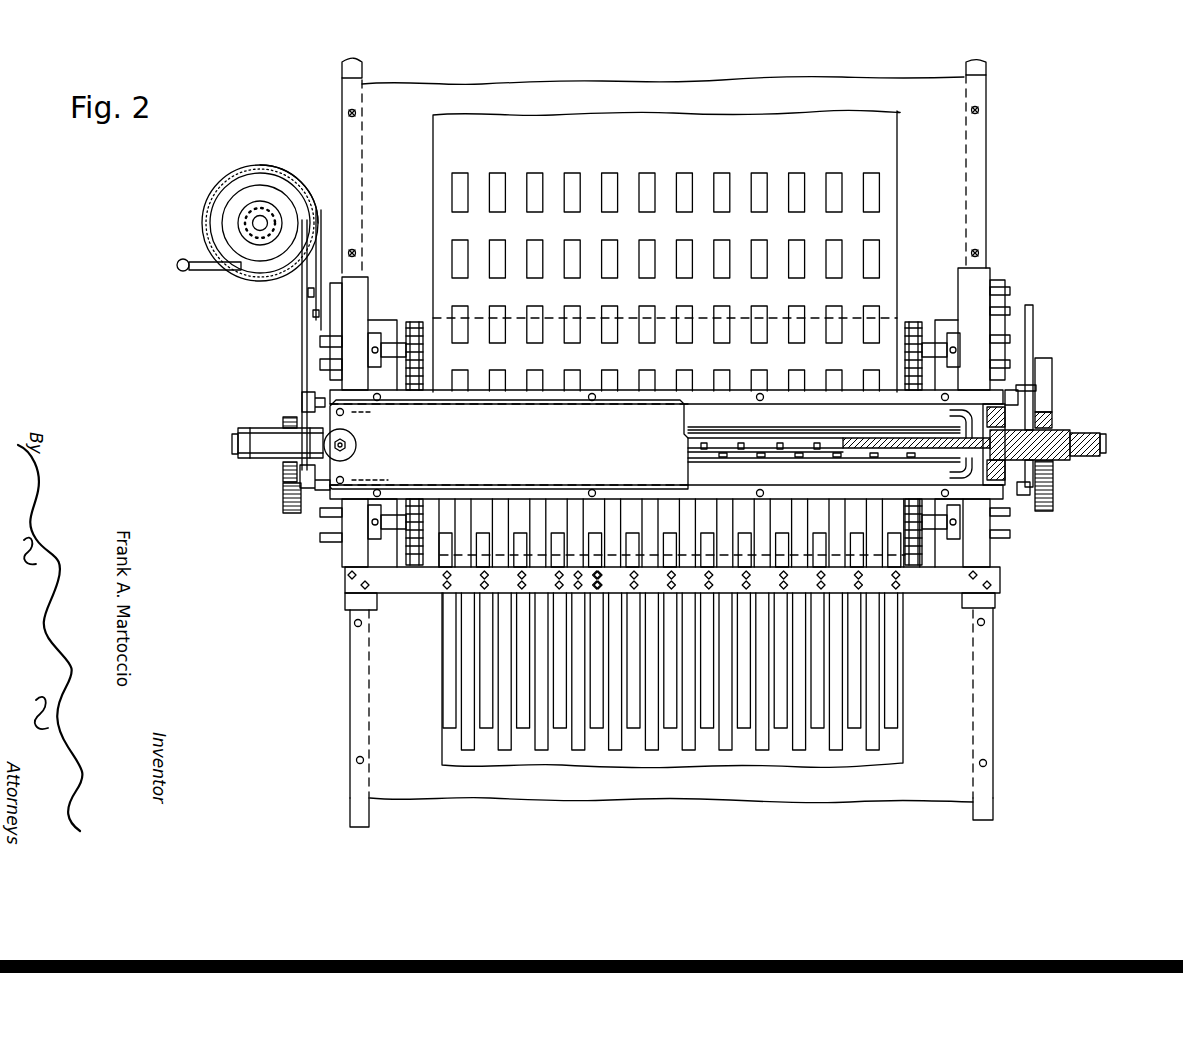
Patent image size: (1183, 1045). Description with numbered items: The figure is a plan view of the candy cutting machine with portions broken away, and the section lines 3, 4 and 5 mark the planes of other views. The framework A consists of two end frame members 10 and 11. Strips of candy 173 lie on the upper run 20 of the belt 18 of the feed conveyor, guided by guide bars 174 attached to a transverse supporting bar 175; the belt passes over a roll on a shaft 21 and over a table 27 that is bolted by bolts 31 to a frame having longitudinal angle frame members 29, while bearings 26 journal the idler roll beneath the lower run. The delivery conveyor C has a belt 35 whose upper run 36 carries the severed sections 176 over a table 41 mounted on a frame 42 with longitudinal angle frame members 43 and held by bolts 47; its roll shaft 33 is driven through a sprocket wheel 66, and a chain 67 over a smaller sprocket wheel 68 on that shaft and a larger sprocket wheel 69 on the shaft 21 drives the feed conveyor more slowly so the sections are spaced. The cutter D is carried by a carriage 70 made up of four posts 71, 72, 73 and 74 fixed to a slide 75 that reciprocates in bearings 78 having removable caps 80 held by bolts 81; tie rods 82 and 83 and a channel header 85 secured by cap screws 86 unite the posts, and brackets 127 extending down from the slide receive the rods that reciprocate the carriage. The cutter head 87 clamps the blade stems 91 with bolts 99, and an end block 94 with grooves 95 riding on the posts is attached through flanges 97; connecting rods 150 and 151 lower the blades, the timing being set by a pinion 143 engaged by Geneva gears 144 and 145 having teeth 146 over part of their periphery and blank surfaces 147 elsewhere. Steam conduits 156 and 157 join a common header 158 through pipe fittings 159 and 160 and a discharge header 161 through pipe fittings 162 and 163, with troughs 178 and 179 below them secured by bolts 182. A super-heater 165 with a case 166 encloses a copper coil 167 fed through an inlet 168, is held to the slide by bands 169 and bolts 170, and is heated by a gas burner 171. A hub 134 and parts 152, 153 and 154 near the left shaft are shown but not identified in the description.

The section line 3- 3 is at (628, 95).
The section line 4- 4 is at (235, 445).
The section line 5- 5 is at (330, 650).
The framework A is at (985, 268).
The delivery conveyor C is at (772, 128).
The cutter D is at (706, 429).
The end frame member 10 is at (348, 578).
The end frame member 11 is at (990, 572).
The belt 18 is at (686, 800).
The upper run of belt 20 is at (870, 762).
The shaft 21 is at (398, 545).
The bearings 26 is at (1000, 290).
The table 27 is at (420, 800).
The longitudinal angle frame members 29 is at (352, 812).
The bolts 31 is at (356, 760).
The shaft 33 is at (940, 324).
The belt 35 is at (900, 150).
The upper run of belt 36 is at (835, 128).
The table 41 is at (430, 100).
The frame 42 is at (990, 160).
The longitudinal angle frame members 43 is at (345, 66).
The bolts 47 is at (350, 112).
The sprocket wheel 66 is at (926, 332).
The chain 67 is at (426, 394).
The sprocket wheel 68 is at (404, 332).
The sprocket wheel 69 is at (416, 570).
The carriage 70 is at (550, 390).
The post 71 is at (375, 479).
The post 72 is at (365, 414).
The post 73 is at (1024, 496).
The post 74 is at (1012, 392).
The slide 75 is at (326, 322).
The bearings 78 is at (320, 344).
The removable caps 80 is at (320, 364).
The bolts 81 is at (330, 552).
The tie rod 82 is at (369, 533).
The tie rod 83 is at (363, 333).
The header 85 is at (546, 440).
The cap screws 86 is at (346, 478).
The cutter head 87 is at (800, 438).
The stems 91 is at (704, 450).
The end block 94 is at (966, 425).
The grooves 95 is at (984, 420).
The flanges 97 is at (964, 460).
The bolts 99 is at (894, 456).
The brackets 127 is at (355, 295).
The hub 134 is at (356, 447).
The pinion 143 is at (1053, 424).
The Geneva gear 144 is at (290, 472).
The Geneva gear 145 is at (1053, 480).
The teeth 146 is at (285, 503).
The blank surfaces 147 is at (292, 368).
The connecting rod 150 is at (254, 434).
The connecting rod 151 is at (1100, 432).
The shaft 152 is at (280, 452).
The shaft end 153 is at (1060, 458).
The nut 154 is at (235, 450).
The steam conduit 156 is at (786, 430).
The steam conduit 157 is at (786, 462).
The header 158 is at (290, 412).
The pipe fitting 159 is at (300, 396).
The pipe fitting 160 is at (302, 500).
The header 161 is at (1035, 332).
The pipe fitting 162 is at (1038, 396).
The pipe fitting 163 is at (1045, 497).
The super-heater 165 is at (206, 208).
The case 166 is at (268, 168).
The copper coil 167 is at (248, 186).
The inlet 168 is at (190, 272).
The bands 169 is at (303, 188).
The bolts 170 is at (313, 313).
The gas burner 171 is at (238, 223).
The strips of candy 173 is at (540, 738).
The guide bars 174 is at (700, 748).
The transverse supporting bar 175 is at (950, 598).
The sections 176 is at (718, 184).
The trough 178 is at (744, 463).
The trough 179 is at (742, 420).
The bolts 182 is at (598, 390).